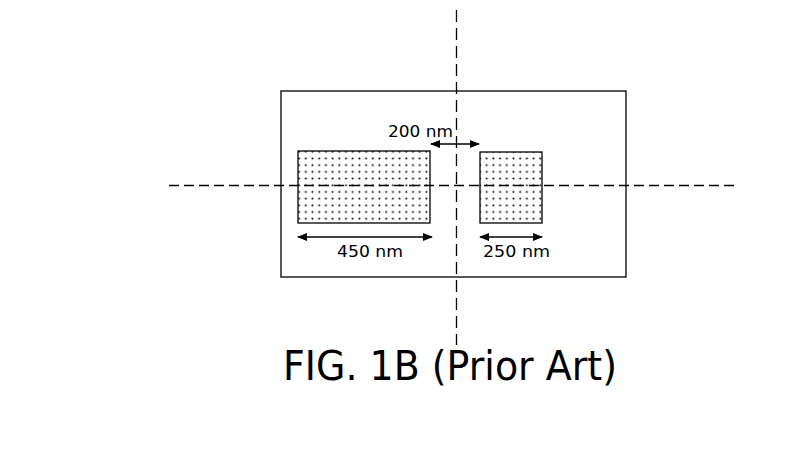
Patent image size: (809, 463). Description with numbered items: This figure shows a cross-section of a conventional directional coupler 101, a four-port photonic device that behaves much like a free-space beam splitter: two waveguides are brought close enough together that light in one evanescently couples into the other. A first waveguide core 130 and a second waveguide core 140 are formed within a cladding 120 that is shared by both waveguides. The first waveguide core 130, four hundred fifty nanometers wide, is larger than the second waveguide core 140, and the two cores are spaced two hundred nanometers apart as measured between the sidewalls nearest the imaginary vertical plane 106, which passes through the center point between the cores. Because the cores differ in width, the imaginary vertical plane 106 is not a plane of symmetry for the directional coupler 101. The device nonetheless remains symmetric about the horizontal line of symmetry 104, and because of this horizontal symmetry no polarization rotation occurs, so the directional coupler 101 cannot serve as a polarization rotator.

The directional coupler 101 is at (188, 250).
The horizontal line of symmetry 104 is at (687, 185).
The imaginary vertical plane 106 is at (455, 55).
The cladding 120 is at (290, 121).
The first waveguide core 130 is at (370, 157).
The second waveguide core 140 is at (542, 160).